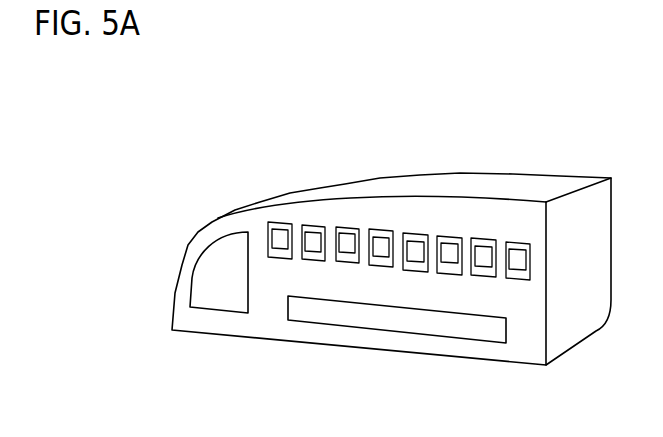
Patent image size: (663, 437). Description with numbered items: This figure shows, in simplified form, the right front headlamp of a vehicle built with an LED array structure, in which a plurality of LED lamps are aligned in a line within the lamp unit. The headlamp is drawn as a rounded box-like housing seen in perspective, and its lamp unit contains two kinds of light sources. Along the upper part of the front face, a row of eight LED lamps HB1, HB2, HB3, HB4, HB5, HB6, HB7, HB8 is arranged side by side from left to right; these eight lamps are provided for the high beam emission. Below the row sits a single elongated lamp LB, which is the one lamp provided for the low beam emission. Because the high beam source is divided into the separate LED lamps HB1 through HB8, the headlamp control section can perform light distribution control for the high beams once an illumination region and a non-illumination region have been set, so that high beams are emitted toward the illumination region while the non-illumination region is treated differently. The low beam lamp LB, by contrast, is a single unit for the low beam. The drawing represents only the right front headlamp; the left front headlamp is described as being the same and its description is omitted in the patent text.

The LED lamp for high beam emission HB1 is at (277, 222).
The LED lamp for high beam emission HB2 is at (312, 224).
The LED lamp for high beam emission HB3 is at (347, 227).
The LED lamp for high beam emission HB4 is at (379, 229).
The LED lamp for high beam emission HB5 is at (415, 233).
The LED lamp for high beam emission HB6 is at (450, 236).
The LED lamp for high beam emission HB7 is at (485, 238).
The LED lamp for high beam emission HB8 is at (522, 242).
The lamp for low beam emission LB is at (386, 322).